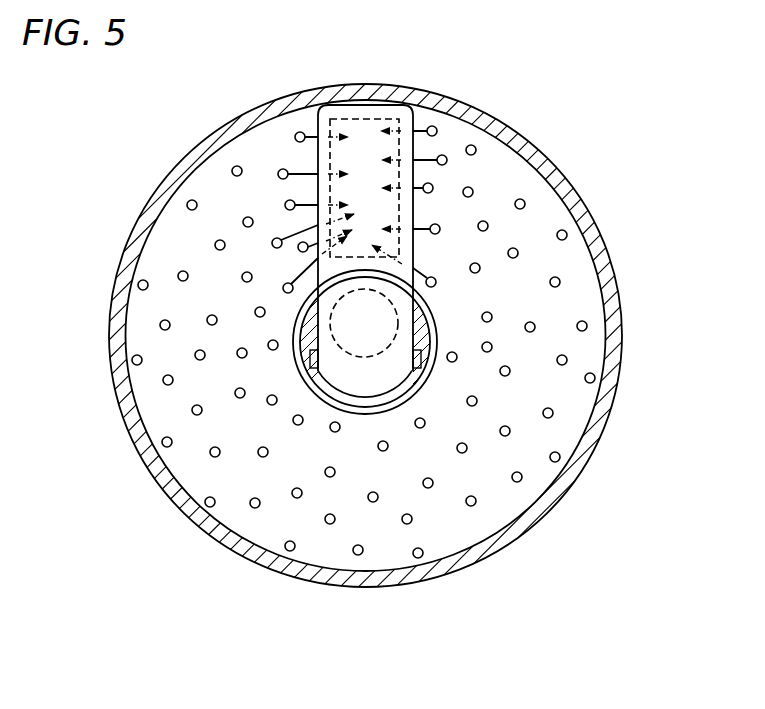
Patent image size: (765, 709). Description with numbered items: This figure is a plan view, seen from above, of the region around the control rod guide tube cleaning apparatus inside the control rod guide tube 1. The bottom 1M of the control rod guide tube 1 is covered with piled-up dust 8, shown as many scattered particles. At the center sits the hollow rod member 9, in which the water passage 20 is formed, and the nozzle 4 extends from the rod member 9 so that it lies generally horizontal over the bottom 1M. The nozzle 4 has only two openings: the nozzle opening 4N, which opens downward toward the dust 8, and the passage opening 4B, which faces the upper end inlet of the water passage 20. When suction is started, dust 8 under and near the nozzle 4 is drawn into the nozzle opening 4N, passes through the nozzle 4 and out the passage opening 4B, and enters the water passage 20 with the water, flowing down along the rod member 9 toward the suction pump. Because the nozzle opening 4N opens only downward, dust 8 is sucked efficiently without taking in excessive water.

The control rod guide tube 1 is at (597, 443).
The bottom of the control rod guide tube 1M is at (550, 316).
The nozzle 4 is at (317, 160).
The nozzle opening 4N is at (334, 146).
The passage opening 4B is at (358, 300).
The dust 8 is at (472, 189).
The rod member 9 is at (427, 325).
The water passage 20 is at (355, 355).